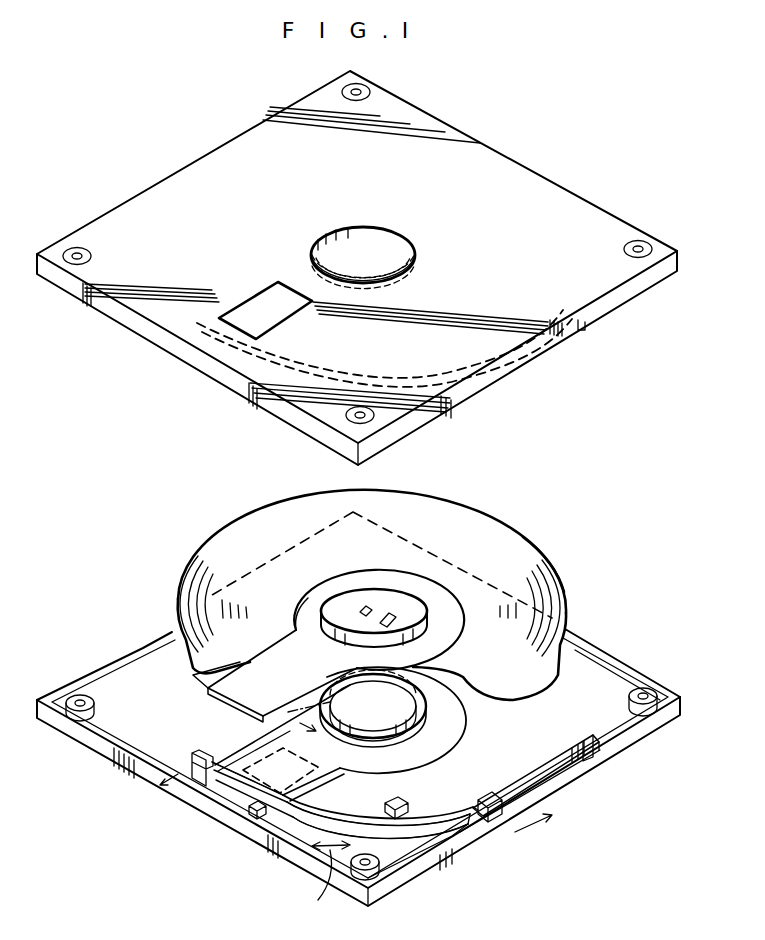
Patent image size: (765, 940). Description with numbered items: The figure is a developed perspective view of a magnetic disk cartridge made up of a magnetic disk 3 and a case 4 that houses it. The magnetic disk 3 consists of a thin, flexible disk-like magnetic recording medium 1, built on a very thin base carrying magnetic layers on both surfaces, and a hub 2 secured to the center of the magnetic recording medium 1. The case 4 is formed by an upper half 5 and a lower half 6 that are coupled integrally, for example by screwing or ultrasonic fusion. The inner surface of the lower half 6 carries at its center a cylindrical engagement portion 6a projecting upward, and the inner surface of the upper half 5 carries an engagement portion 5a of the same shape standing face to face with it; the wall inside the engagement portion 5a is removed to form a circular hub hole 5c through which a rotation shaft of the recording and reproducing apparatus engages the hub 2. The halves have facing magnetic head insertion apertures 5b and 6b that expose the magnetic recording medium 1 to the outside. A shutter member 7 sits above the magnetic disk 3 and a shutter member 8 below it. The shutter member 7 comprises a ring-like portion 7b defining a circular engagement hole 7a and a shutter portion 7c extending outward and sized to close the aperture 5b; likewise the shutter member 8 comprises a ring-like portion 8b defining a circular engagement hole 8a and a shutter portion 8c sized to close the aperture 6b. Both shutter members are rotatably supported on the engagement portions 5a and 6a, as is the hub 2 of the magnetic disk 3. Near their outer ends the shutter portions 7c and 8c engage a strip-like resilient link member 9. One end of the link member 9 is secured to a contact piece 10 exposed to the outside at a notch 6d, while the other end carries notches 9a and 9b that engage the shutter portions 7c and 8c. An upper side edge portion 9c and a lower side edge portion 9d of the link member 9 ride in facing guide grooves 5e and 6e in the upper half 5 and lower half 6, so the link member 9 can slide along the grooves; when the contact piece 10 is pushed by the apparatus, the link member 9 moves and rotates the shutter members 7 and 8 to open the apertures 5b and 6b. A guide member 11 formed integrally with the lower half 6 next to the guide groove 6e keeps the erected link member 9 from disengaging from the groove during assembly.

The magnetic recording medium 1 is at (530, 565).
The hub 2 is at (410, 605).
The magnetic disk 3 is at (540, 538).
The case 4 is at (132, 437).
The upper half 5 is at (176, 380).
The engagement portion 5a is at (405, 290).
The magnetic head insertion aperture 5b is at (272, 285).
The hub hole 5c is at (373, 252).
The guide groove 5e is at (382, 376).
The lower half 6 is at (143, 625).
The cylindrical engagement portion 6a is at (440, 757).
The magnetic head insertion aperture 6b is at (246, 800).
The notch 6d is at (462, 804).
The guide groove 6e is at (445, 832).
The shutter member 7 is at (200, 699).
The circular engagement hole 7a is at (290, 598).
The ring-like portion 7b is at (362, 580).
The shutter portion 7c is at (206, 676).
The shutter member 8 is at (232, 752).
The circular engagement hole 8a is at (440, 712).
The ring-like portion 8b is at (455, 733).
The shutter portion 8c is at (320, 780).
The link member 9 is at (405, 828).
The notch 9a is at (200, 778).
The notch 9b is at (255, 810).
The upper side edge portion 9c is at (300, 842).
The lower side edge portion 9d is at (385, 840).
The contact piece 10 is at (500, 812).
The guide member 11 is at (396, 803).